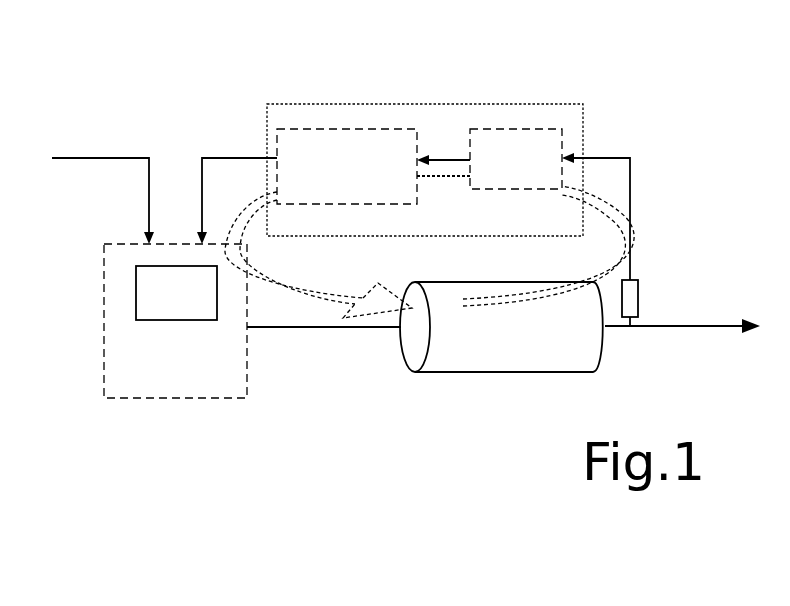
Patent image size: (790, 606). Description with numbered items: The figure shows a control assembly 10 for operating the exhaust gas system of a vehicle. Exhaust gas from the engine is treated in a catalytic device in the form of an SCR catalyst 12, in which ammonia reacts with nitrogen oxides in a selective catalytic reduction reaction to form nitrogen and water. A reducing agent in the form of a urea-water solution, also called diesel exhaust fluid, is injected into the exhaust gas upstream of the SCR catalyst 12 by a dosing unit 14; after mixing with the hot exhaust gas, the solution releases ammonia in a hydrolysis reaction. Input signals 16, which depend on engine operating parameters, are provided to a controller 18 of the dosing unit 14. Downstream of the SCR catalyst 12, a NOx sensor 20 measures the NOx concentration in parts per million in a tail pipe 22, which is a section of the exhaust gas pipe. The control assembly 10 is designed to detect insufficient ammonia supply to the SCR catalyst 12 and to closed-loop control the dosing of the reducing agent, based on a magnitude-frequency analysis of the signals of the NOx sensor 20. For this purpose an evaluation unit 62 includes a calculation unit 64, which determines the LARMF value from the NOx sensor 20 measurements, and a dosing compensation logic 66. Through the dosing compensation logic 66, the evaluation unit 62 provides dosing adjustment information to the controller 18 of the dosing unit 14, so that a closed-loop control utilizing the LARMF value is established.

The control assembly 10 is at (98, 69).
The SCR catalyst 12 is at (472, 372).
The dosing unit 14 is at (189, 383).
The input signals 16 is at (118, 158).
The controller 18 is at (175, 307).
The NOx sensor 20 is at (638, 297).
The tail pipe 22 is at (697, 325).
The evaluation unit 62 is at (574, 131).
The calculation unit 64 is at (520, 184).
The dosing compensation logic 66 is at (345, 191).